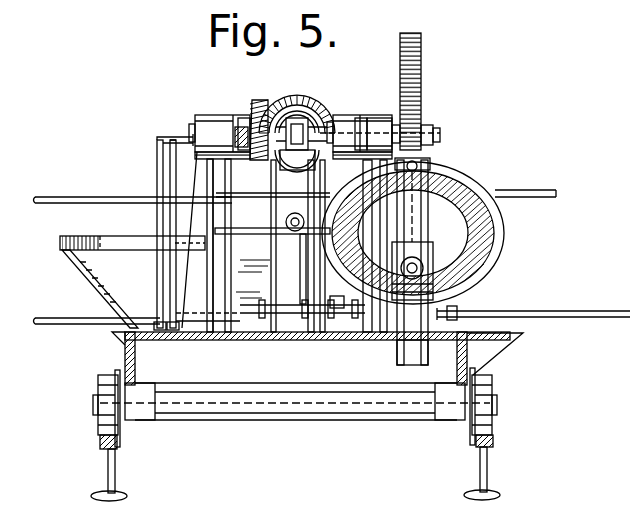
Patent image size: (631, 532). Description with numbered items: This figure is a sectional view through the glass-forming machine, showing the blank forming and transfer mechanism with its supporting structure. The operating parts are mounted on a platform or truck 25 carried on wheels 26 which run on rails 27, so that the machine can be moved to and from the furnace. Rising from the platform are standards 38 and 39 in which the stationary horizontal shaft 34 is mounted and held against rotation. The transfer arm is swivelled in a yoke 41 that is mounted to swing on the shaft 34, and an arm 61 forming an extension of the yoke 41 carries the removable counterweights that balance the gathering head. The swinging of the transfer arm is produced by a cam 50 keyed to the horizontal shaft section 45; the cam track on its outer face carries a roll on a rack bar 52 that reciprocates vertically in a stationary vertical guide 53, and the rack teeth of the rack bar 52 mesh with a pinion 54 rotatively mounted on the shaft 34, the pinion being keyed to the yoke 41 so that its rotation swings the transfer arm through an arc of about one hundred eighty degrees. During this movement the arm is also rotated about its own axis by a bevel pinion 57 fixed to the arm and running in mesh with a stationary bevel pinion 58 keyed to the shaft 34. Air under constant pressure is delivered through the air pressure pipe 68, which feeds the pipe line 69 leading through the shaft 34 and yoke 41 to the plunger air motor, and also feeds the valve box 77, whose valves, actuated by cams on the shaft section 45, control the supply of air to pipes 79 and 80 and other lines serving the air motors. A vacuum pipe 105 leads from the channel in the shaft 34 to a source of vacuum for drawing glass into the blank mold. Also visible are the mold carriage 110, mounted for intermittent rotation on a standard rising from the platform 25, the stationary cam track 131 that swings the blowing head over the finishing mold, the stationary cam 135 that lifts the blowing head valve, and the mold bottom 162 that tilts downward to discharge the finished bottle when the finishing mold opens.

The platform or truck 25 is at (125, 350).
The wheels 26 is at (100, 390).
The rails 27 is at (100, 445).
The stationary horizontal shaft 34 is at (357, 100).
The standard 38 is at (232, 114).
The standard 39 is at (385, 118).
The yoke 41 is at (247, 117).
The shaft section 45 is at (431, 289).
The cam 50 is at (478, 186).
The rack bar 52 is at (421, 72).
The stationary vertical guide 53 is at (428, 198).
The pinion 54 is at (433, 133).
The bevel pinion 57 is at (298, 106).
The stationary bevel pinion 58 is at (262, 104).
The arm 61 is at (235, 136).
The air pressure pipe 68 is at (598, 316).
The pipe line 69 is at (178, 302).
The valve box 77 is at (432, 266).
The pipe 79 is at (336, 299).
The pipe 80 is at (312, 272).
The vacuum pipe 105 is at (75, 318).
The mold carriage 110 is at (97, 197).
The stationary cam track 131 is at (110, 238).
The stationary cam 135 is at (146, 260).
The mold bottom 162 is at (285, 221).